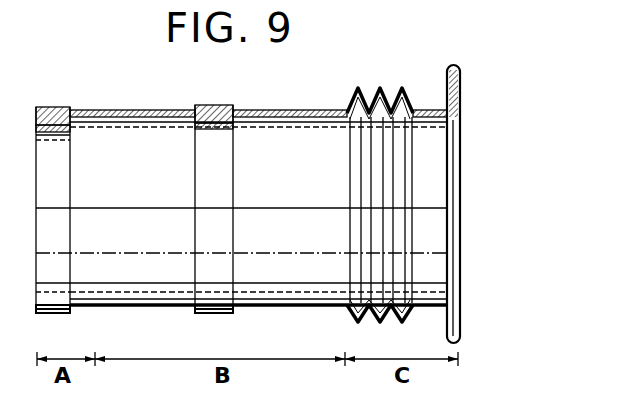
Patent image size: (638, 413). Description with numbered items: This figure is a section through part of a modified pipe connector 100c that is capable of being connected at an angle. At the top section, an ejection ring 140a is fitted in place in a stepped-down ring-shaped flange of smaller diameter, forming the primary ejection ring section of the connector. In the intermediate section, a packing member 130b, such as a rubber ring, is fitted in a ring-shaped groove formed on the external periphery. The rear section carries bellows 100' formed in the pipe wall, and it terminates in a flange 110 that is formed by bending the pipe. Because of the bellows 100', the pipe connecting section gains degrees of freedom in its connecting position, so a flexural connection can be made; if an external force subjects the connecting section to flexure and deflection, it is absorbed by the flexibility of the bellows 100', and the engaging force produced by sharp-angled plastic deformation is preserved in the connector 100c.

The connector 100c is at (461, 194).
The ejection ring 140a is at (52, 108).
The packing member 130b is at (210, 105).
The bellows 100' is at (380, 192).
The flange 110 is at (460, 97).